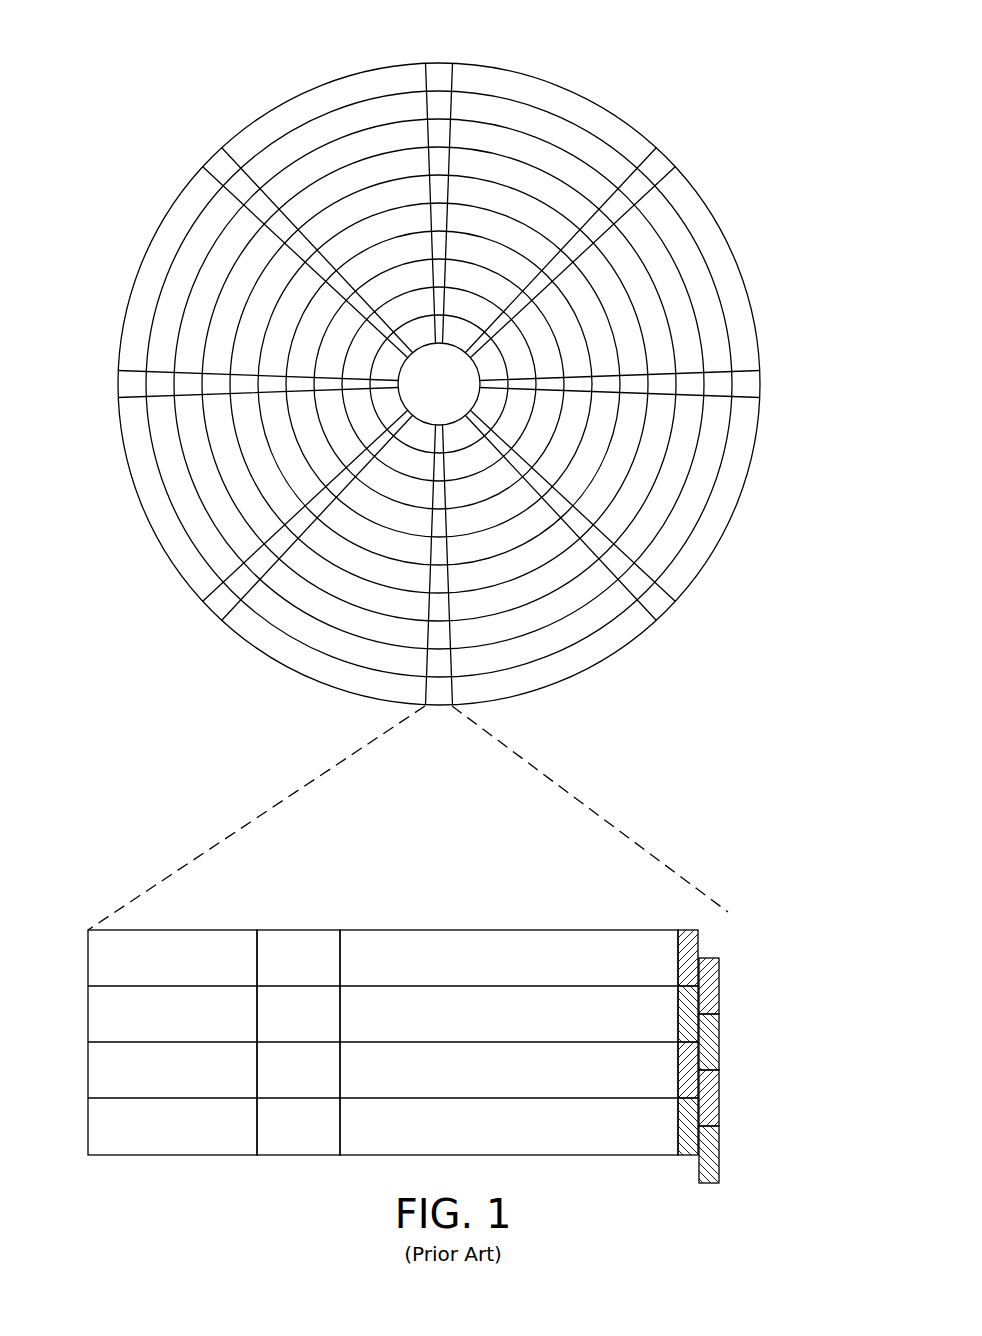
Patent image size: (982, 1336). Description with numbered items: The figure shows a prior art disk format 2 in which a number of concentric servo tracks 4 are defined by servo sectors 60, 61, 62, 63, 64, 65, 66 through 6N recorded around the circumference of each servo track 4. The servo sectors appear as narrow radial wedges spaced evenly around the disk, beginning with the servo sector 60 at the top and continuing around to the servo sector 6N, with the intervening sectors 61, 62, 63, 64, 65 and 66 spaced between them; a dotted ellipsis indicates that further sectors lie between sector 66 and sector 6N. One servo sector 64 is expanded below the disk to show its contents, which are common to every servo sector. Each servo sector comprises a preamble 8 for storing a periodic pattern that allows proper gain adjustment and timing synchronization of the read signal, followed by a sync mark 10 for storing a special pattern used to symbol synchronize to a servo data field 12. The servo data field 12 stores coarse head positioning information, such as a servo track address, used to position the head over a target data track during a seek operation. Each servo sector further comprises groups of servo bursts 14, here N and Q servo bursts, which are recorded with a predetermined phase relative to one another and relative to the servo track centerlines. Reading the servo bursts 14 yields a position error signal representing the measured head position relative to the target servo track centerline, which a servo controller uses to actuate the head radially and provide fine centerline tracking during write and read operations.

The disk format 2 is at (439, 359).
The servo track 4 is at (548, 126).
The servo sector 60 is at (440, 71).
The servo sector 61 is at (659, 163).
The servo sector 62 is at (757, 386).
The servo sector 63 is at (661, 606).
The servo sector 64 is at (297, 780).
The servo sector 65 is at (216, 607).
The servo sector 66 is at (121, 384).
The servo sector 6N is at (215, 159).
The preamble 8 is at (180, 930).
The sync mark 10 is at (302, 930).
The servo data field 12 is at (495, 930).
The servo bursts 14 is at (713, 930).